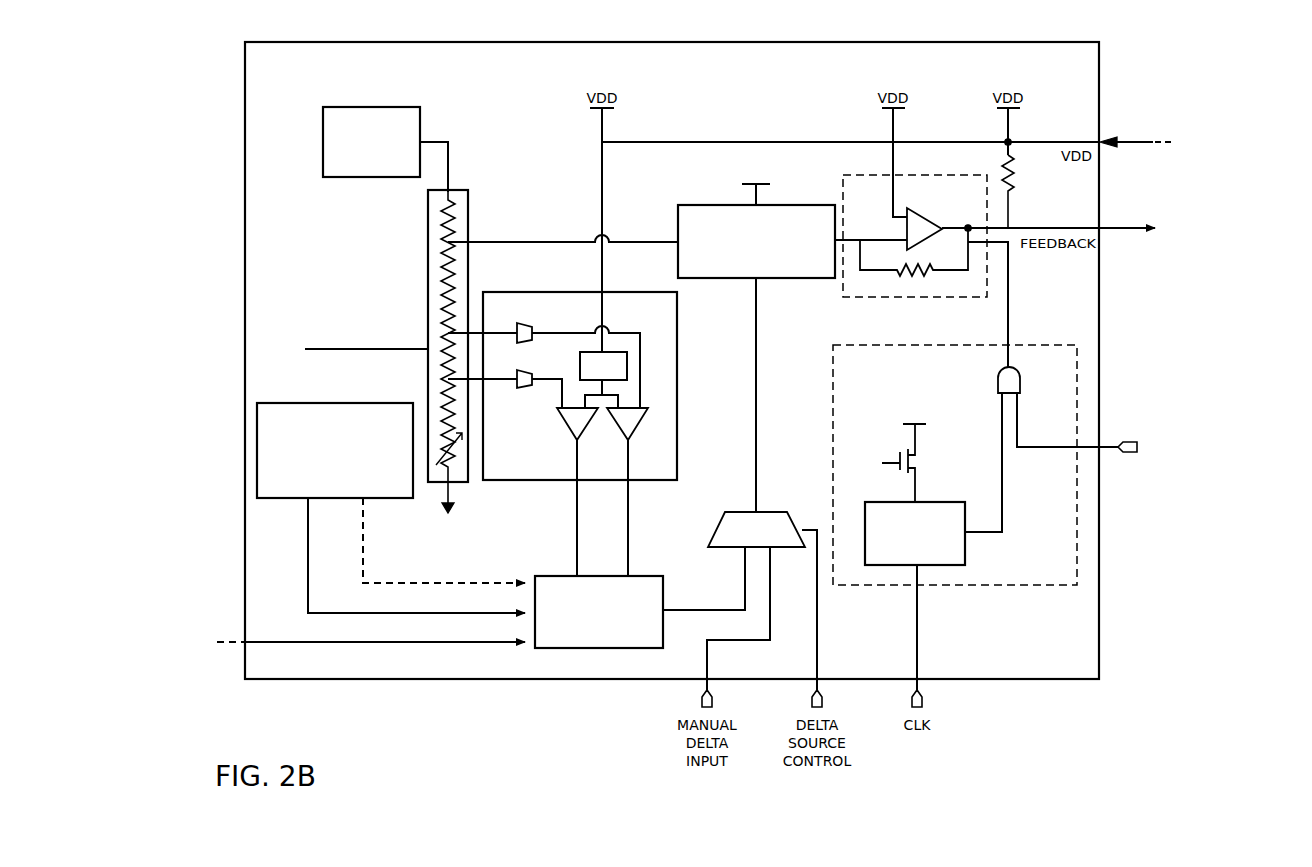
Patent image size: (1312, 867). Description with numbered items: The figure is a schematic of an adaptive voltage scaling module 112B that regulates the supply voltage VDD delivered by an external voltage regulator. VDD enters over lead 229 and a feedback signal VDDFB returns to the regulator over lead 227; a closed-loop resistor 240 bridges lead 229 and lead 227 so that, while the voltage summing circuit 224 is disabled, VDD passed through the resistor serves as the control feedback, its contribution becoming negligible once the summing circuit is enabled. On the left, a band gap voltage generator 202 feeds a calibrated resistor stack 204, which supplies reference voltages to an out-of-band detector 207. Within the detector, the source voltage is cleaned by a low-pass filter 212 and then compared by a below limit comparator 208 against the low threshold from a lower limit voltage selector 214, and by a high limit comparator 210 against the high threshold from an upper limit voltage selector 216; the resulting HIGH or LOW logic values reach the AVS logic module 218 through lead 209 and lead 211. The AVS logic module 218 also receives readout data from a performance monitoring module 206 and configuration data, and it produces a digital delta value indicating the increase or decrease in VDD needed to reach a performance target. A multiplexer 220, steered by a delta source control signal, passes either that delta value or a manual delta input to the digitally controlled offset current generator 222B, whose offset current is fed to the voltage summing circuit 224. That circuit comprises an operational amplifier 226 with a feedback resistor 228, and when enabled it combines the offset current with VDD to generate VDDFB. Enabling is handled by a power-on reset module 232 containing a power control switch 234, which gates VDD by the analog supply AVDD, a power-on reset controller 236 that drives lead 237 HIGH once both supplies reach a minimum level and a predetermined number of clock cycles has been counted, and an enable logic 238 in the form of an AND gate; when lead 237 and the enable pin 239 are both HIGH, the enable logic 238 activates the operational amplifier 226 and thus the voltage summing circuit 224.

The adaptive voltage scaling module 112B is at (1100, 60).
The band gap voltage generator 202 is at (393, 178).
The calibrated resistor stack 204 is at (428, 266).
The performance monitoring module 206 is at (280, 403).
The out-of-band detector 207 is at (590, 294).
The below limit comparator 208 is at (562, 420).
The lead 209 is at (577, 500).
The high limit comparator 210 is at (650, 422).
The lead 211 is at (628, 556).
The low-pass filter 212 is at (627, 366).
The lower limit voltage selector 214 is at (517, 388).
The upper limit voltage selector 216 is at (534, 333).
The AVS logic module 218 is at (548, 576).
The multiplexer 220 is at (722, 525).
The digitally controlled offset current generator 222B is at (785, 280).
The voltage summing circuit 224 is at (999, 200).
The operational amplifier 226 is at (907, 230).
The lead 227 is at (998, 228).
The feedback resistor 228 is at (968, 262).
The lead 229 is at (1025, 142).
The power-on reset module 232 is at (1005, 517).
The power control switch 234 is at (920, 462).
The power-on reset controller 236 is at (965, 552).
The lead 237 is at (1002, 513).
The enable logic 238 is at (998, 380).
The enable pin 239 is at (1021, 397).
The closed-loop resistor 240 is at (1015, 183).